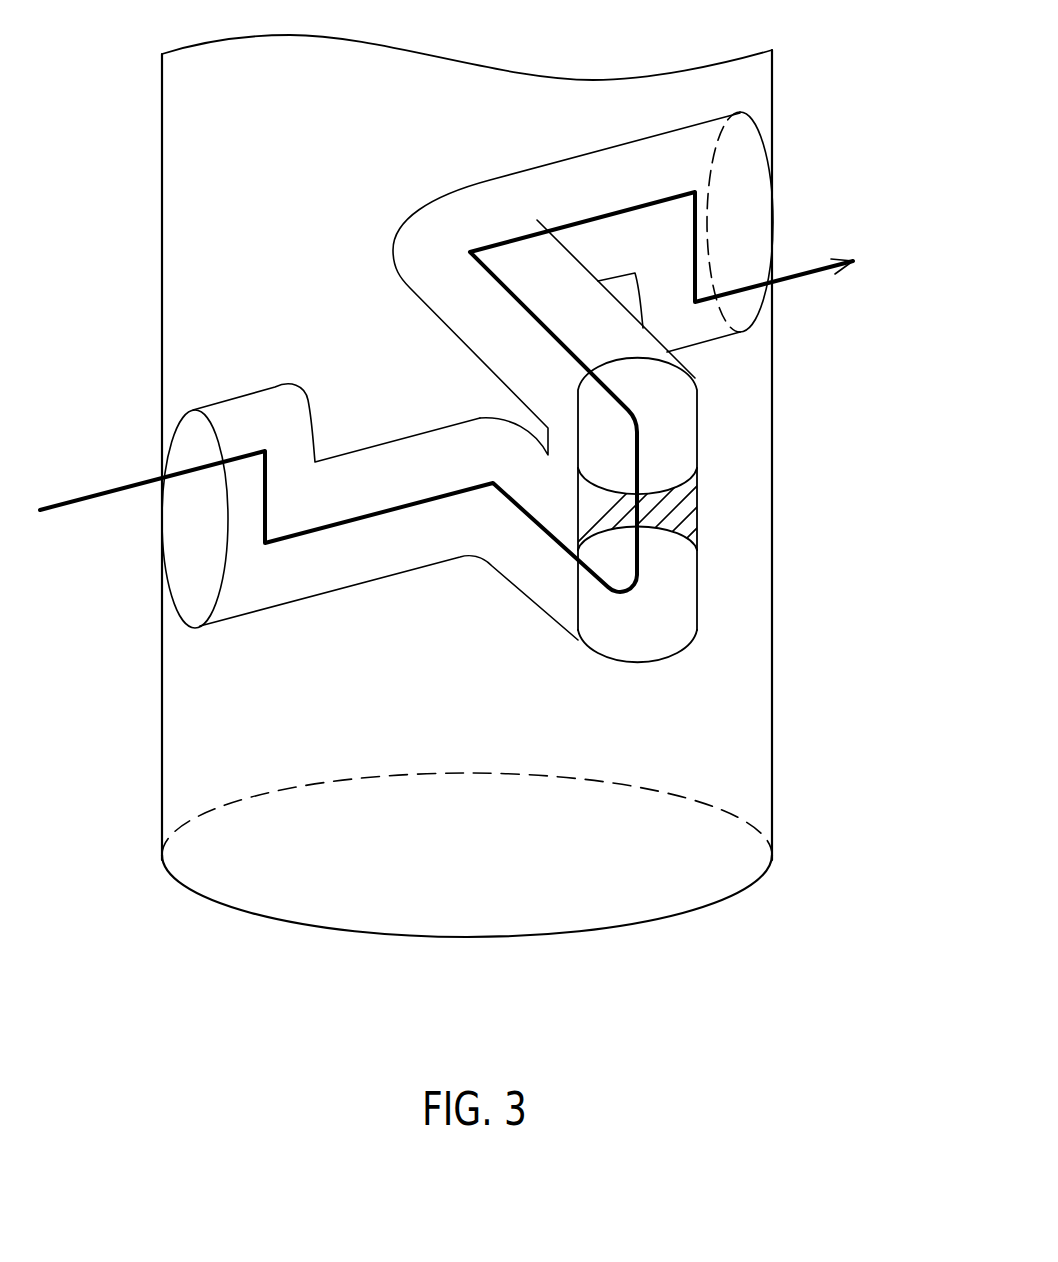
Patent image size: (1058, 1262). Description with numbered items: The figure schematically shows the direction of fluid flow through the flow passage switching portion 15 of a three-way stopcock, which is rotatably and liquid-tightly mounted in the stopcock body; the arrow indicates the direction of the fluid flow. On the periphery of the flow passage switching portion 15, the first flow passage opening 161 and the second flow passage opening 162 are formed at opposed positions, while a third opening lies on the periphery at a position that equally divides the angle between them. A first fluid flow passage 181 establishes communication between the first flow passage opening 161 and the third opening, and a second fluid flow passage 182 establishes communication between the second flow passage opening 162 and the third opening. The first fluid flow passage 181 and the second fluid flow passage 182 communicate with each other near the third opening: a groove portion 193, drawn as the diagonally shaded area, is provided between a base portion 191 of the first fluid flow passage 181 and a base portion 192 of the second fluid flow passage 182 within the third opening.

The flow passage switching portion 15 is at (763, 807).
The first flow passage opening 161 is at (180, 563).
The second flow passage opening 162 is at (753, 208).
The first fluid flow passage 181 is at (368, 560).
The second fluid flow passage 182 is at (657, 148).
The base portion of the first fluid flow passage 191 is at (683, 596).
The base portion of the second fluid flow passage 192 is at (668, 437).
The groove portion 193 is at (687, 515).